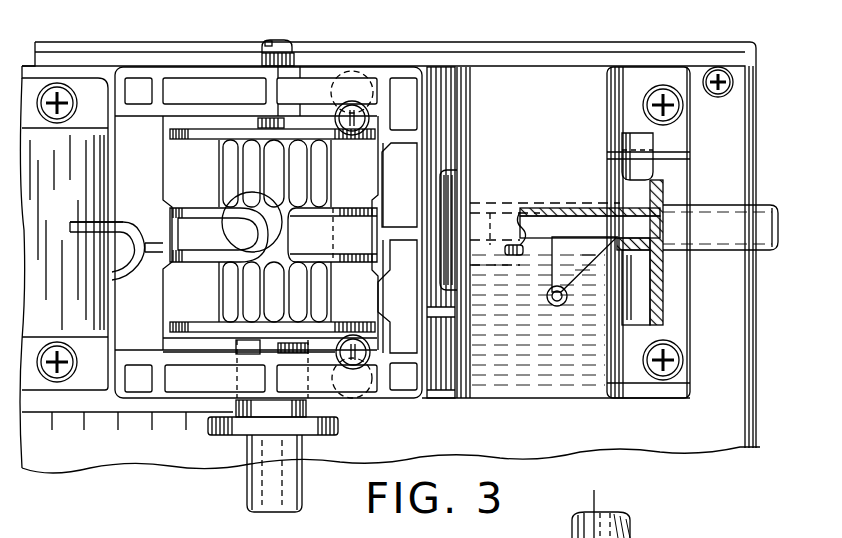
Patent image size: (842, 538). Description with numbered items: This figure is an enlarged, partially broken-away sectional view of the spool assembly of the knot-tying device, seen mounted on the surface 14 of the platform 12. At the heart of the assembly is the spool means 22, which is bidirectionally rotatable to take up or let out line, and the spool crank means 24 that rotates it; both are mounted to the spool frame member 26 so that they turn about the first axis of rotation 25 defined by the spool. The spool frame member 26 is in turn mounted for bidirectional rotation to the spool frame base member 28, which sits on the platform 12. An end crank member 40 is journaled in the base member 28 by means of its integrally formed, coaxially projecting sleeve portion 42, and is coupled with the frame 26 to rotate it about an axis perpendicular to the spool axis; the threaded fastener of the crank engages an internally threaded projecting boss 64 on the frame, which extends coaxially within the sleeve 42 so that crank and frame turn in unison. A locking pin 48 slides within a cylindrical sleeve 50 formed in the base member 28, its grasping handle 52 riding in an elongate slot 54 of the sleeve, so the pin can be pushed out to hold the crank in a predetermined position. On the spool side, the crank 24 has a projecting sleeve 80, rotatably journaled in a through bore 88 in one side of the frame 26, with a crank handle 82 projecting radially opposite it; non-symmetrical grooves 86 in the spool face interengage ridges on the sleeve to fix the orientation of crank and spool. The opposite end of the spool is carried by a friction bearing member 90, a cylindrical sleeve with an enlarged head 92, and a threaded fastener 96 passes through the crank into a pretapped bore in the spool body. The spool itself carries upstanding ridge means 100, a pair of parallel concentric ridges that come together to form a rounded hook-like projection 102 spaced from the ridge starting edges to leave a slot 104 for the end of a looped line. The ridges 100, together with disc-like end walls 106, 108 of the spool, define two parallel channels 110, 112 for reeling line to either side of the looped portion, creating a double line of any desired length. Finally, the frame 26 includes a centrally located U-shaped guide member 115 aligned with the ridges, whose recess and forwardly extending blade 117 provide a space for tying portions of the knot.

The platform 12 is at (721, 36).
The surface 14 is at (452, 437).
The spool means 22 is at (245, 172).
The spool crank means 24 is at (321, 436).
The first axis of rotation 25 is at (594, 510).
The spool frame member 26 is at (416, 66).
The spool frame base member 28 is at (580, 55).
The end crank member 40 is at (740, 198).
The sleeve portion 42 is at (445, 182).
The locking pin 48 is at (573, 222).
The cylindrical sleeve 50 is at (473, 205).
The handle 52 is at (557, 308).
The elongate slot 54 is at (523, 258).
The projecting boss 64 is at (425, 178).
The projecting sleeve 80 is at (312, 406).
The crank handle 82 is at (279, 500).
The recesses or grooves 86 is at (238, 348).
The through bore 88 is at (240, 390).
The friction bearing member 90 is at (250, 118).
The enlarged head 92 is at (300, 58).
The threaded fastener 96 is at (272, 40).
The ridge means 100 is at (219, 235).
The hook-like projection 102 is at (238, 188).
The slot 104 is at (278, 233).
The end wall 106 is at (168, 328).
The end wall 108 is at (170, 136).
The channel 110 is at (225, 168).
The channel 112 is at (226, 290).
The U-shaped guide member 115 is at (113, 248).
The blade 117 is at (85, 222).